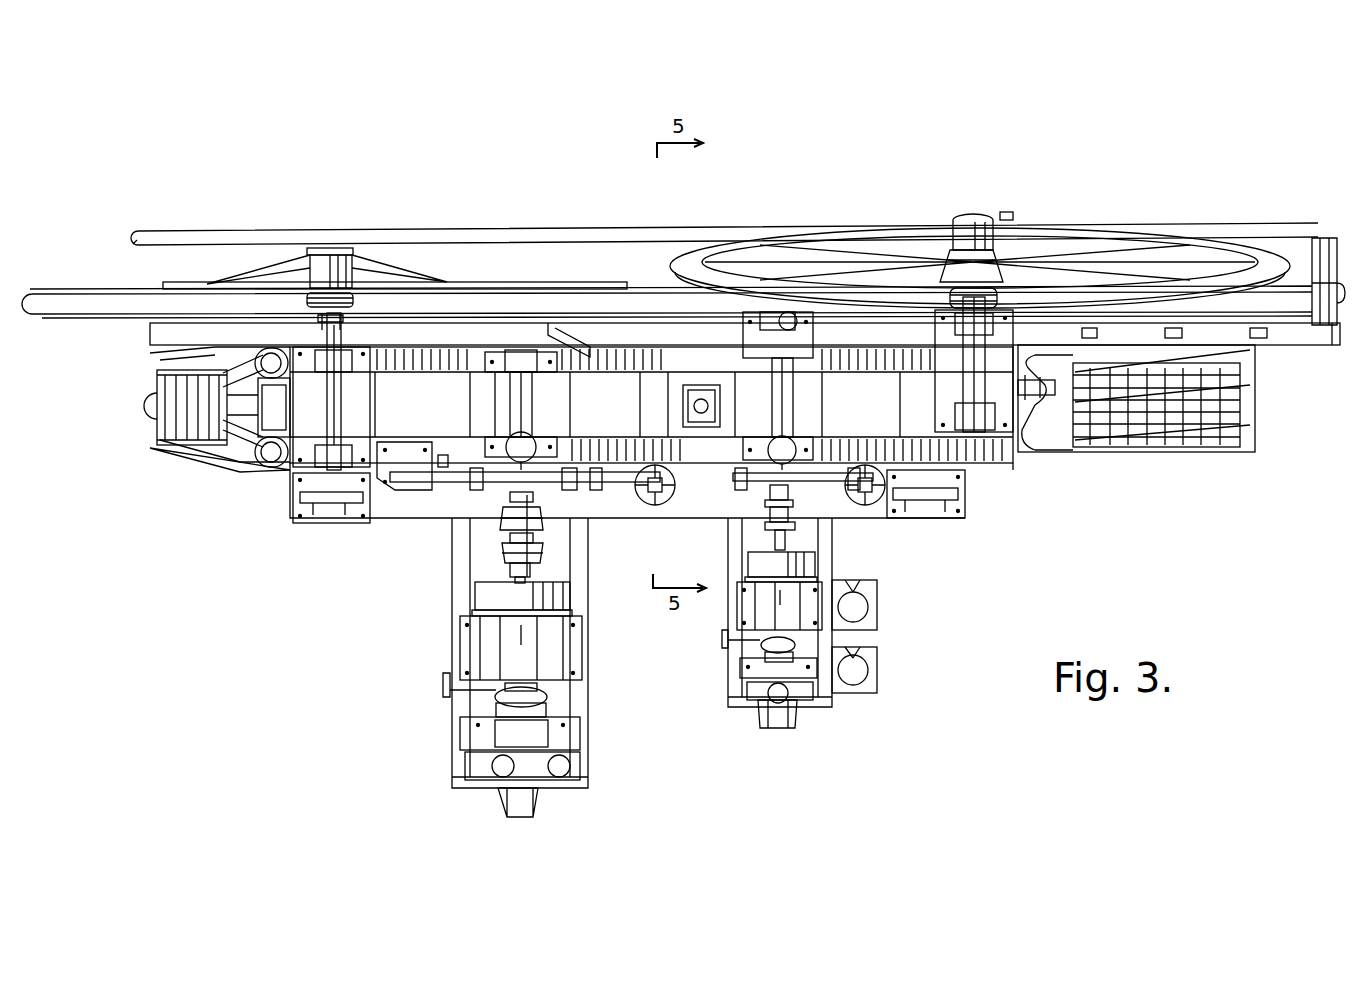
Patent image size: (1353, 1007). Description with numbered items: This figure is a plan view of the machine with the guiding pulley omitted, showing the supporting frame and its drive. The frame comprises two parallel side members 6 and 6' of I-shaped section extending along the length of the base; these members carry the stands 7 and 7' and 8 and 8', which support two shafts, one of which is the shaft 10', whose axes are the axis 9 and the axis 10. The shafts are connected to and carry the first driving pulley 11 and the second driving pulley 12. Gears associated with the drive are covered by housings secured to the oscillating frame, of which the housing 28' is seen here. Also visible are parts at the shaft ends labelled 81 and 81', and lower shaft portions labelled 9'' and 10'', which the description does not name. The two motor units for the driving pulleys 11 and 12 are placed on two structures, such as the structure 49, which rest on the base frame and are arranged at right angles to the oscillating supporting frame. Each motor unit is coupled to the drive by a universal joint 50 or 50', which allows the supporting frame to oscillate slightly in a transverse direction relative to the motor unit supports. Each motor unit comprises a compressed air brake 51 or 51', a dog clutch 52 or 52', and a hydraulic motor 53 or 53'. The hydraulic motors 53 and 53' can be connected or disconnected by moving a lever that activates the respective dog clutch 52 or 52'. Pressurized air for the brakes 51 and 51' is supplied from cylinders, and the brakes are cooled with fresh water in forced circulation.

The first driving pulley 11 is at (88, 289).
The axis 9 is at (327, 259).
The bearing 81 is at (356, 249).
The axis 10 is at (971, 224).
The bearing 81' is at (1007, 245).
The second driving pulley 12 is at (1082, 280).
The housing 28' is at (708, 354).
The stand 7 is at (331, 391).
The side member 6' is at (651, 346).
The shaft 10' is at (748, 339).
The stand 8 is at (951, 364).
The stand 7' is at (324, 430).
The side member 6 is at (651, 435).
The shaft 9'' is at (526, 410).
The shaft 10'' is at (807, 414).
The stand 8' is at (941, 412).
The universal joint 50' is at (748, 517).
The structure 49 is at (465, 567).
The universal joint 50 is at (561, 537).
The compressed air brake 51 is at (543, 629).
The compressed air brake 51' is at (810, 583).
The dog clutch 52 is at (488, 726).
The dog clutch 52' is at (746, 666).
The hydraulic motor 53 is at (489, 812).
The hydraulic motor 53' is at (811, 717).